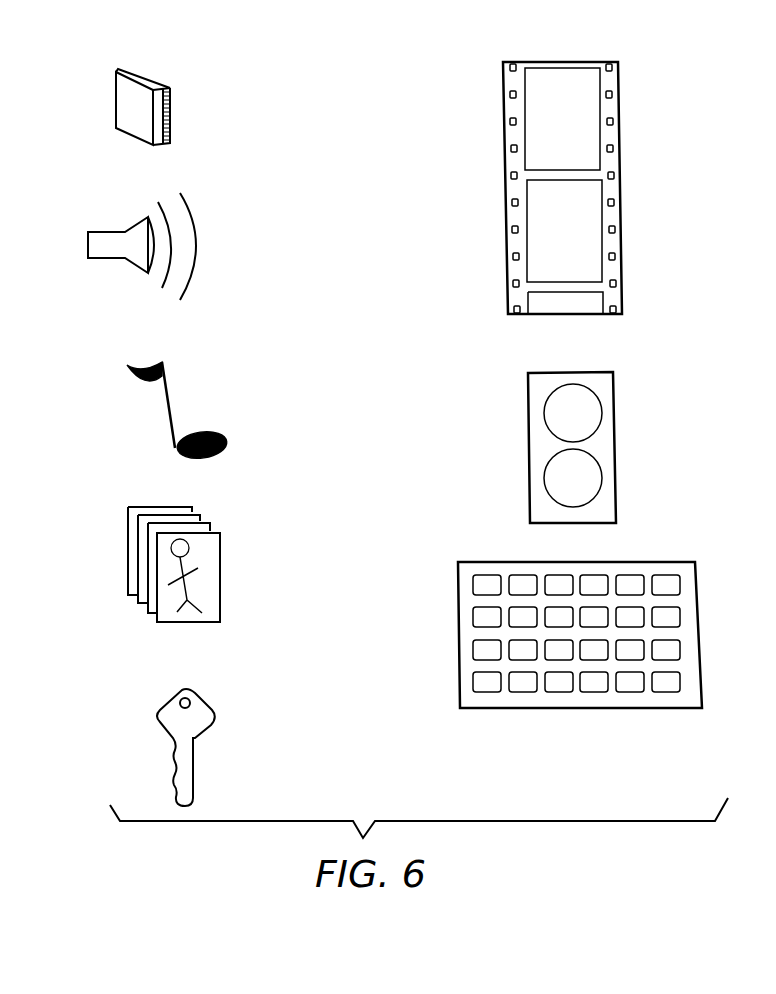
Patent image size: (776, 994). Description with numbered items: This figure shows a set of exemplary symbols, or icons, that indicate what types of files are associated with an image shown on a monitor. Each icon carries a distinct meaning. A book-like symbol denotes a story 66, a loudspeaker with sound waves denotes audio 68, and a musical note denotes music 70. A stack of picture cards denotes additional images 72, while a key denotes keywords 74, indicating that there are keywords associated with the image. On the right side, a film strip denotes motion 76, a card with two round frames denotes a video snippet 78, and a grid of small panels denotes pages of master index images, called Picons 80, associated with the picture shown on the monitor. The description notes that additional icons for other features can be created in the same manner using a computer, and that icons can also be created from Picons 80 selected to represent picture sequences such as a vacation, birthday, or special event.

The story icon 66 is at (168, 97).
The audio icon 68 is at (192, 222).
The music icon 70 is at (225, 438).
The additional images icon 72 is at (215, 557).
The keywords icon 74 is at (207, 702).
The motion icon 76 is at (622, 102).
The video snippet icon 78 is at (617, 403).
The Picons 80 is at (698, 578).